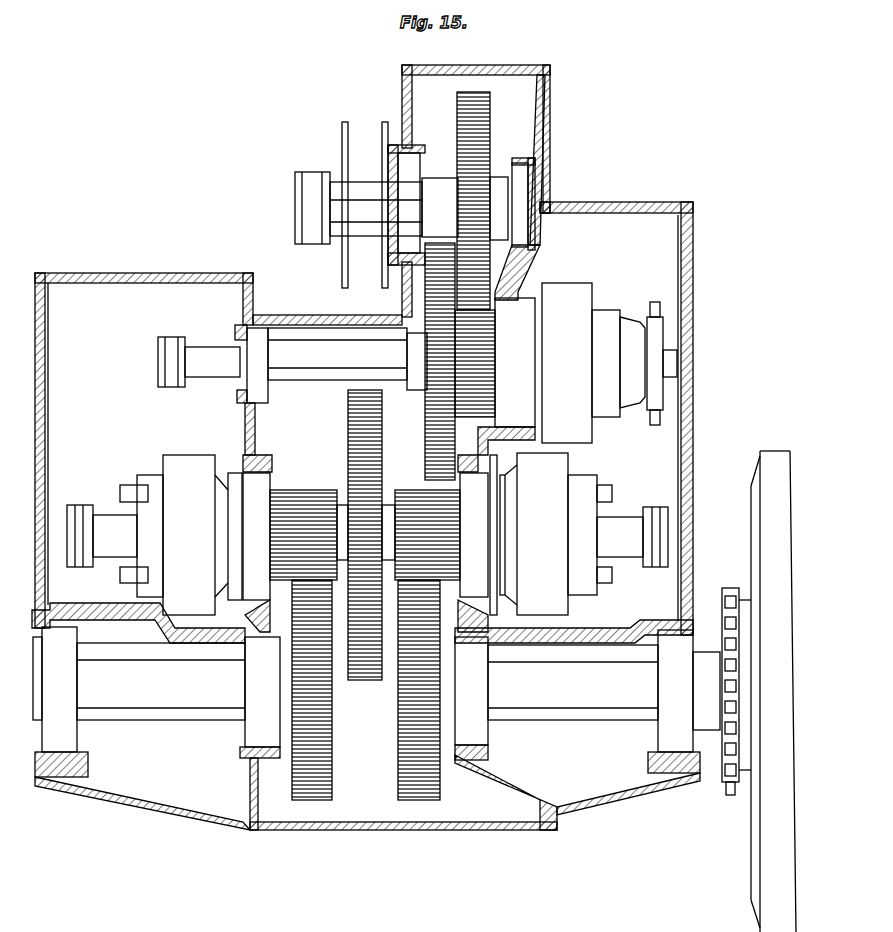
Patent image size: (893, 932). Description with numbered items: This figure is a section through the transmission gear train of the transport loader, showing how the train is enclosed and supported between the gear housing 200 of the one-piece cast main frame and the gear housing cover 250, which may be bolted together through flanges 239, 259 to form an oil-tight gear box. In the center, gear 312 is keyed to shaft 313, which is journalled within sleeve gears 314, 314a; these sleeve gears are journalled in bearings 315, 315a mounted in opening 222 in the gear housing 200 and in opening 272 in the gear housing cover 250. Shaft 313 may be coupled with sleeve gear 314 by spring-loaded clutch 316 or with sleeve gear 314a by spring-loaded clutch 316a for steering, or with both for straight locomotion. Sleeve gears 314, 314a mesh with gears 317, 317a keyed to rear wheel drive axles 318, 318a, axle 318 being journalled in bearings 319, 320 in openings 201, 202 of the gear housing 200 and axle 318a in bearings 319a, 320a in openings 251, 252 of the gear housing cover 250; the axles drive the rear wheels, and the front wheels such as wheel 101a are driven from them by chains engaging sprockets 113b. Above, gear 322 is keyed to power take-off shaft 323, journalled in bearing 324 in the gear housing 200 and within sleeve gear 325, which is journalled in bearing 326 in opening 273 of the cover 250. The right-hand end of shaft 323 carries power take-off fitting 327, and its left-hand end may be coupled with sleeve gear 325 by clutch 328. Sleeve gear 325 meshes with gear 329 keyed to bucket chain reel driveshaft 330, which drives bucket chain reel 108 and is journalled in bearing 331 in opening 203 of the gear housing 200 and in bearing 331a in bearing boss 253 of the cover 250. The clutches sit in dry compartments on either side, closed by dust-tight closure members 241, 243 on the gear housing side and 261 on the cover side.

The left-hand power driven wheel 101a is at (760, 910).
The bucket chain reel 108 is at (340, 148).
The sprocket 113b is at (730, 588).
The gear housing 200 is at (285, 315).
The opening 201 is at (50, 780).
The opening 202 is at (252, 760).
The opening 203 is at (383, 155).
The opening 222 is at (250, 616).
The flange 239 is at (540, 68).
The dust-tight closure member 241 is at (160, 274).
The dust-tight closure member 243 is at (46, 390).
The gear housing cover 250 is at (602, 203).
The opening 251 is at (706, 762).
The opening 252 is at (460, 760).
The bearing boss 253 is at (532, 168).
The flange 259 is at (548, 74).
The dust-tight closure member 261 is at (694, 300).
The opening 272 is at (476, 620).
The opening 273 is at (500, 292).
The gear 312 is at (348, 407).
The shaft 313 is at (386, 520).
The sleeve gear 314 is at (302, 500).
The sleeve gear 314a is at (426, 500).
The bearing 315 is at (266, 490).
The bearing 315a is at (470, 497).
The spring-loaded clutch 316 is at (165, 606).
The spring-loaded clutch 316a is at (570, 606).
The gear 317 is at (332, 766).
The gear 317a is at (410, 800).
The rear wheel drive axle 318 is at (145, 720).
The rear wheel drive axle 318a is at (556, 720).
The bearing 319 is at (74, 737).
The bearing 319a is at (662, 736).
The bearing 320 is at (247, 740).
The bearing 320a is at (490, 742).
The gear 322 is at (426, 411).
The power take-off shaft 323 is at (345, 345).
The bearing 324 is at (248, 394).
The sleeve gear 325 is at (480, 352).
The bearing 326 is at (520, 300).
The power take-off fitting 327 is at (212, 346).
The clutch 328 is at (590, 290).
The gear 329 is at (490, 100).
The bucket chain reel driveshaft 330 is at (440, 178).
The bearing 331 is at (412, 150).
The bearing 331a is at (516, 165).